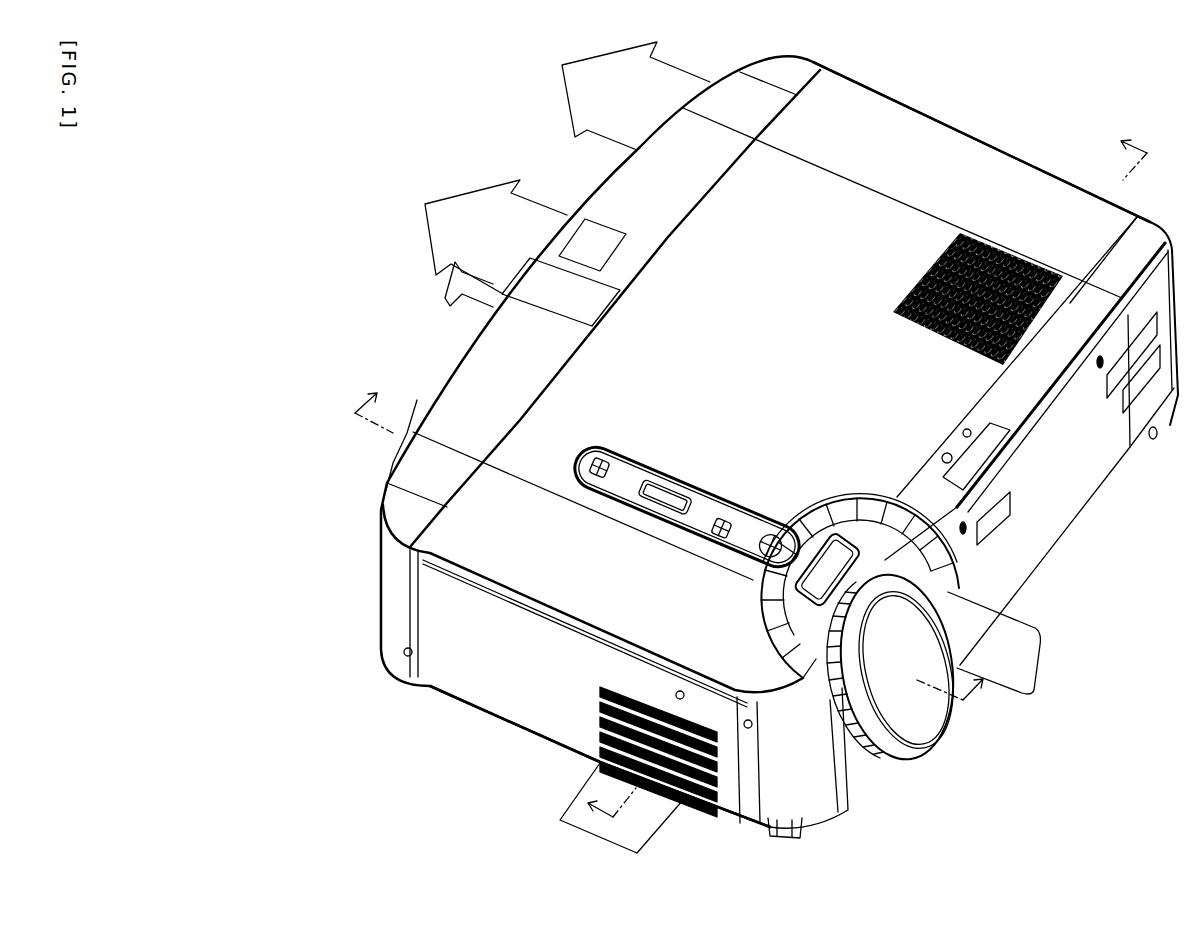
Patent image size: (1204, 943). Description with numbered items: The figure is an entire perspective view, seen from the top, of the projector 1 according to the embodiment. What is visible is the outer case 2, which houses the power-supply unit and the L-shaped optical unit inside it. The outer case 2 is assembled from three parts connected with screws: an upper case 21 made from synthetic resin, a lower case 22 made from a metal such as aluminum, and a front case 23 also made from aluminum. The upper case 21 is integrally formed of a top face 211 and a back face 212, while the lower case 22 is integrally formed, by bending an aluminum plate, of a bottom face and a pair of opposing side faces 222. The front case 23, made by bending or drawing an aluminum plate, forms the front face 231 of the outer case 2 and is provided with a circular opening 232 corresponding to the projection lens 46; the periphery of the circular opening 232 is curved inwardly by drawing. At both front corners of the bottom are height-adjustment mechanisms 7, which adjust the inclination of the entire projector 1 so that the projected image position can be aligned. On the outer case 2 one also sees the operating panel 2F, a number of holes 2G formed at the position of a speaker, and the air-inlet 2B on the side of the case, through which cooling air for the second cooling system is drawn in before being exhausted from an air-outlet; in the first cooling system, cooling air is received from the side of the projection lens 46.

The projector 1 is at (990, 105).
The outer case 2 is at (990, 170).
The upper case 21 is at (871, 107).
The top face 211 is at (927, 134).
The back face 212 is at (393, 628).
The lower case 22 is at (470, 688).
The side faces 222 is at (543, 717).
The front case 23 is at (1050, 533).
The front face 231 is at (1073, 497).
The circular opening 232 is at (912, 578).
The operating panel 2F is at (637, 470).
The holes 2G is at (995, 243).
The air-inlet 2B is at (697, 812).
The height-adjustment mechanisms 7 is at (783, 838).
The projection lens 46 is at (900, 733).